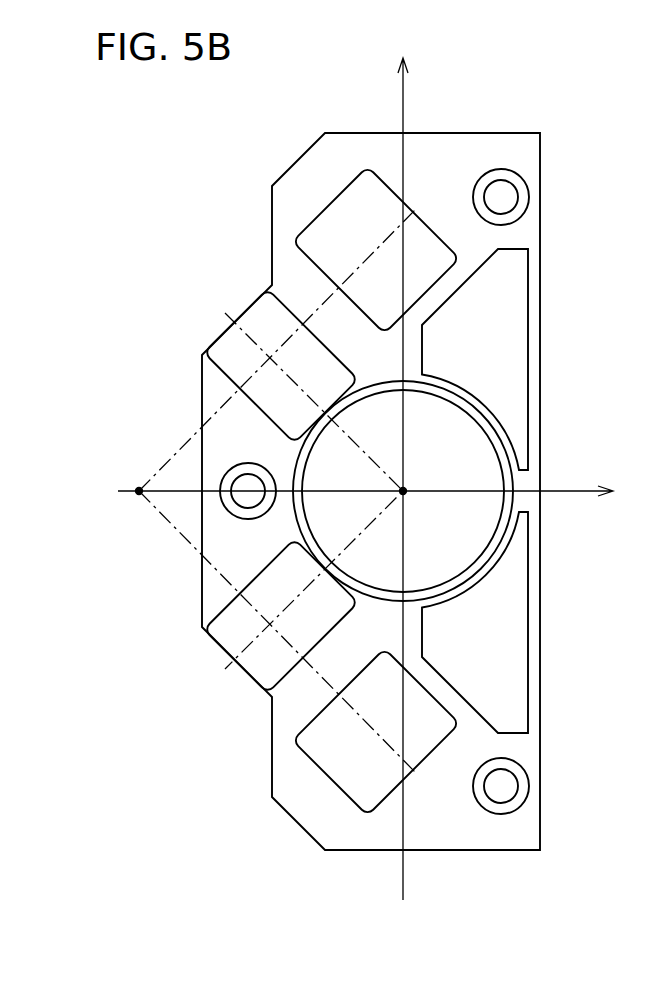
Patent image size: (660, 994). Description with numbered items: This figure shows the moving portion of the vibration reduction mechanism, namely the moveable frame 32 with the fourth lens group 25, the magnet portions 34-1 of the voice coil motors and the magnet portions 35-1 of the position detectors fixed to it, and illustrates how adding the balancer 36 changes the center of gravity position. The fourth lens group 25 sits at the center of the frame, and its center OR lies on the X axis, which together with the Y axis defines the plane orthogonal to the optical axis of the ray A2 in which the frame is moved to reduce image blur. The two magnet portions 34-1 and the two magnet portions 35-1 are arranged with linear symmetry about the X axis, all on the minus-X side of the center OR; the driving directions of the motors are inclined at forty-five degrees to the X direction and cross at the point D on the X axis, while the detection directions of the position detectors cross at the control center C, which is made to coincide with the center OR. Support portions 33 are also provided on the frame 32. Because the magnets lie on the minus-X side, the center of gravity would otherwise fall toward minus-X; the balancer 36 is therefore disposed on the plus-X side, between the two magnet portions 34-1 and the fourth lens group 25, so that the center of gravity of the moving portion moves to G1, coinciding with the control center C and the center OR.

The fourth lens group 25 is at (490, 550).
The moveable frame 32 is at (540, 162).
The support portion 33 is at (528, 213).
The magnet portion 34-1 is at (349, 176).
The magnet portion 35-1 is at (263, 313).
The balancer 36 is at (518, 382).
The ray A2 is at (403, 491).
The center of the fourth lens group OR is at (403, 491).
The center of gravity G1 is at (403, 491).
The control center C is at (403, 491).
The crossing point D is at (139, 491).
The X axis X is at (374, 479).
The Y axis Y is at (412, 470).